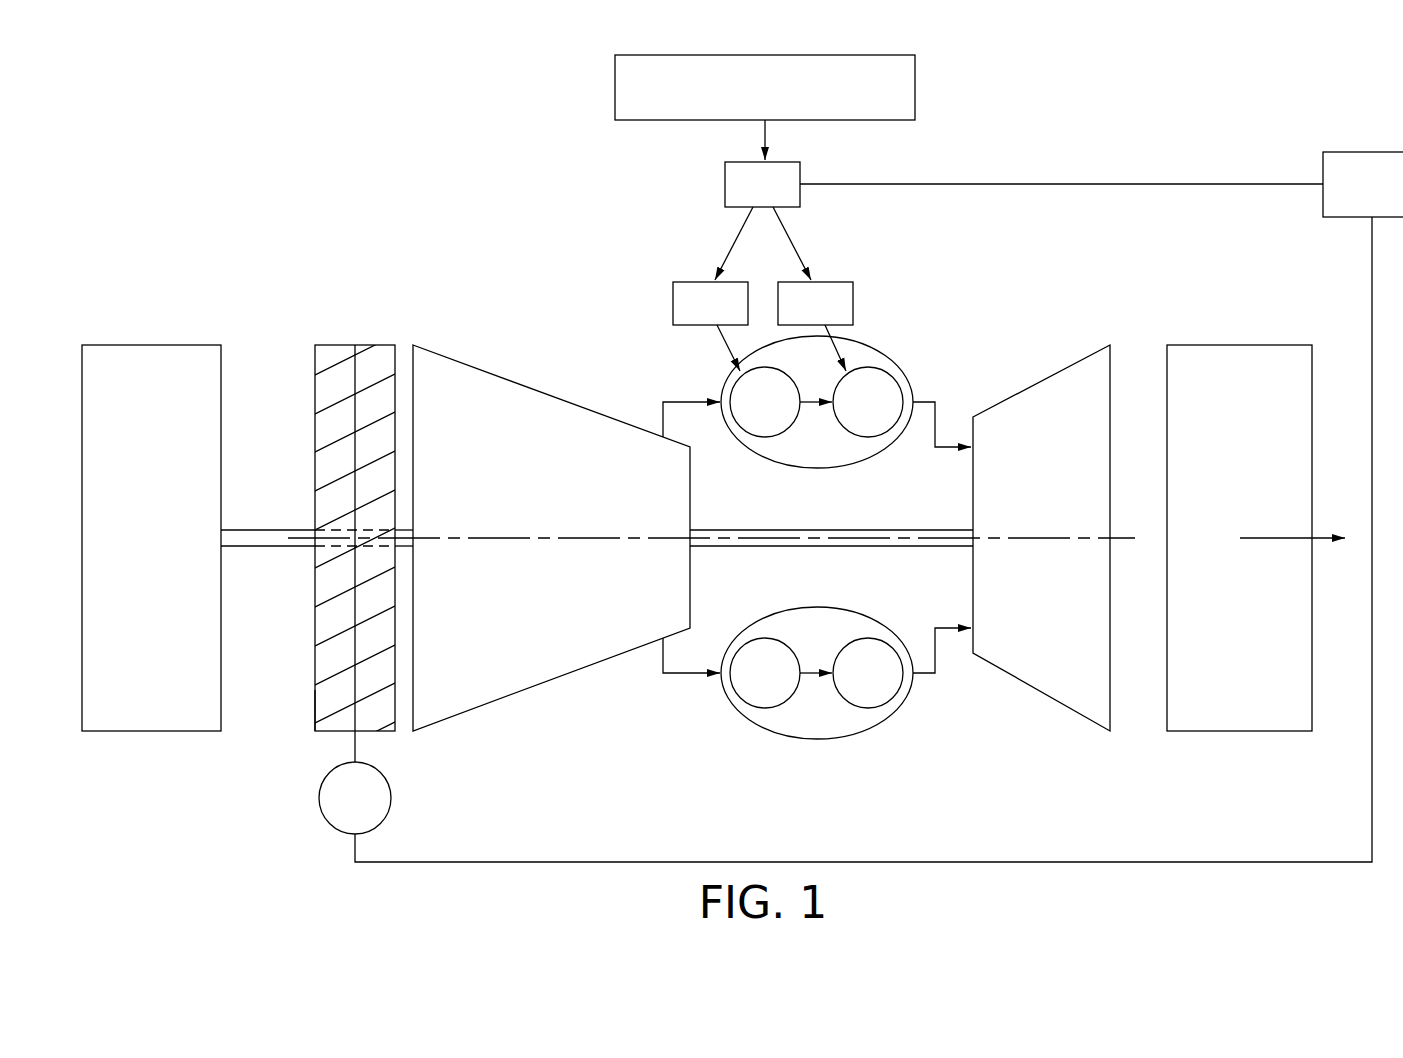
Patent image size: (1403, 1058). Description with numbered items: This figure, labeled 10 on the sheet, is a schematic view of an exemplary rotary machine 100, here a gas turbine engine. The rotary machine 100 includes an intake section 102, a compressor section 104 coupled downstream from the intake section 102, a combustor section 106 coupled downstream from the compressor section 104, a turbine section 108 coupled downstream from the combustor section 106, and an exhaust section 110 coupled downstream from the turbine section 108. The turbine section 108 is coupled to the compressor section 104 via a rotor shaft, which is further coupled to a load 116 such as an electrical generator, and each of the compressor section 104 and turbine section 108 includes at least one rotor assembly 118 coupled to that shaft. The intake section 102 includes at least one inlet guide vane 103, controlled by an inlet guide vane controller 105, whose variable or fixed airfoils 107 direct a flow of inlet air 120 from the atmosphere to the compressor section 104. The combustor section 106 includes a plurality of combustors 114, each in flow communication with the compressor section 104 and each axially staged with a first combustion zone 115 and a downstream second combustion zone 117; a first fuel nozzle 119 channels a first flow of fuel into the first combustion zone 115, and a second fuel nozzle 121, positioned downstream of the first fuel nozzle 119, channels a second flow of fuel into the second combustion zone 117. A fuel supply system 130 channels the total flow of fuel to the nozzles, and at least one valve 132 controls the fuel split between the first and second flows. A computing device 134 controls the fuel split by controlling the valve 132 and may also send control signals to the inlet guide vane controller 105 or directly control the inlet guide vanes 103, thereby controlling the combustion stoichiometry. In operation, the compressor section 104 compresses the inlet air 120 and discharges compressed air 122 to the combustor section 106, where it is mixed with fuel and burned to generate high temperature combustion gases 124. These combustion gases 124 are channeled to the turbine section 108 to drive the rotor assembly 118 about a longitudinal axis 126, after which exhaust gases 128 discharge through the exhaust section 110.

The power generation system 10 is at (199, 196).
The rotary machine 100 is at (929, 304).
The intake section 102 is at (362, 345).
The inlet guide vane 103 is at (353, 390).
The compressor section 104 is at (455, 427).
The inlet guide vane controller 105 is at (332, 813).
The combustor section 106 is at (864, 366).
The airfoils 107 is at (327, 682).
The turbine section 108 is at (1027, 452).
The exhaust section 110 is at (1217, 417).
The combustor 114 is at (886, 352).
The first combustion zone 115 is at (742, 417).
The load 116 is at (124, 420).
The second combustion zone 117 is at (845, 417).
The rotor assembly 118 is at (555, 376).
The first fuel nozzle 119 is at (688, 318).
The inlet air 120 is at (446, 458).
The second fuel nozzle 121 is at (792, 318).
The compressed air 122 is at (670, 402).
The combustion gases 124 is at (917, 421).
The longitudinal axis 126 is at (1125, 535).
The exhaust gases 128 is at (1253, 536).
The fuel supply system 130 is at (742, 103).
The valve 132 is at (739, 199).
The computing device 134 is at (1349, 199).